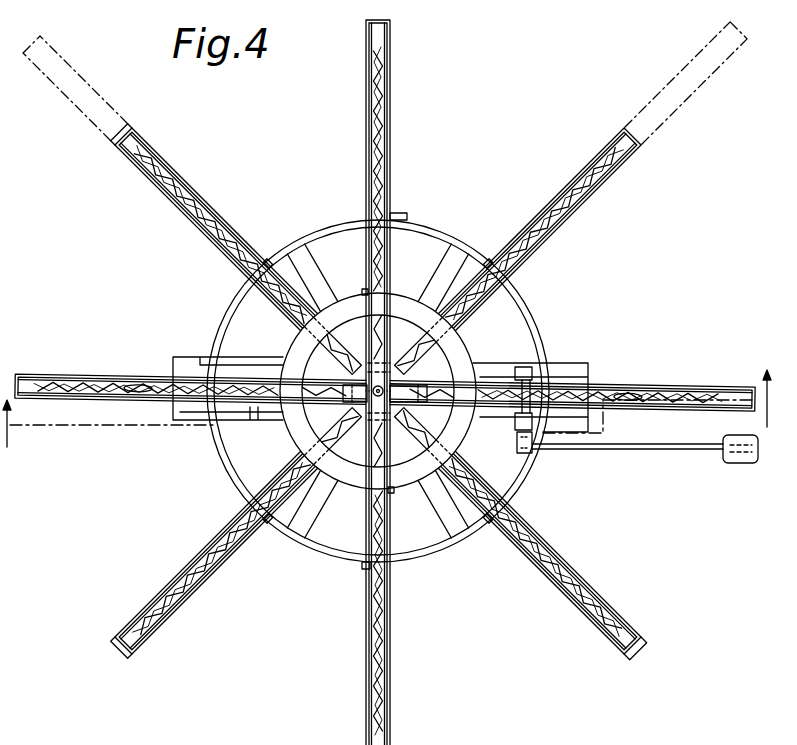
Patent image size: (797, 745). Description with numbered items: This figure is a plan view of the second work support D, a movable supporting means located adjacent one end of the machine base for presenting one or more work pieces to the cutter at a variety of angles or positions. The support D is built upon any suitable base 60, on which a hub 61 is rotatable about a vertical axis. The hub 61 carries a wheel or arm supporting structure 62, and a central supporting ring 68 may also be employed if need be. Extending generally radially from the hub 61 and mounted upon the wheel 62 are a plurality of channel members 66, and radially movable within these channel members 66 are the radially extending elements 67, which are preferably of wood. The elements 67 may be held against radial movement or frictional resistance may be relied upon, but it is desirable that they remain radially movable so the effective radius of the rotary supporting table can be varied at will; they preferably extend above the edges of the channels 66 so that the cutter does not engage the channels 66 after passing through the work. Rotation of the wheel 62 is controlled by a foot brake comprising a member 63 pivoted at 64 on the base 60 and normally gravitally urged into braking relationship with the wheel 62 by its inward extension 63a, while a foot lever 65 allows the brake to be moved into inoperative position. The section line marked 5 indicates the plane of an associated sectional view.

The base 60 is at (188, 357).
The hub 61 is at (400, 372).
The wheel or arm supporting structure 62 is at (425, 230).
The brake member 63 is at (557, 377).
The inward extension 63a is at (487, 420).
The pivot 64 is at (525, 367).
The foot lever 65 is at (692, 450).
The channel members 66 is at (180, 597).
The radially extending elements 67 is at (697, 78).
The central supporting ring 68 is at (353, 484).
The second work support D is at (540, 302).
The section line 5- 5 is at (386, 406).